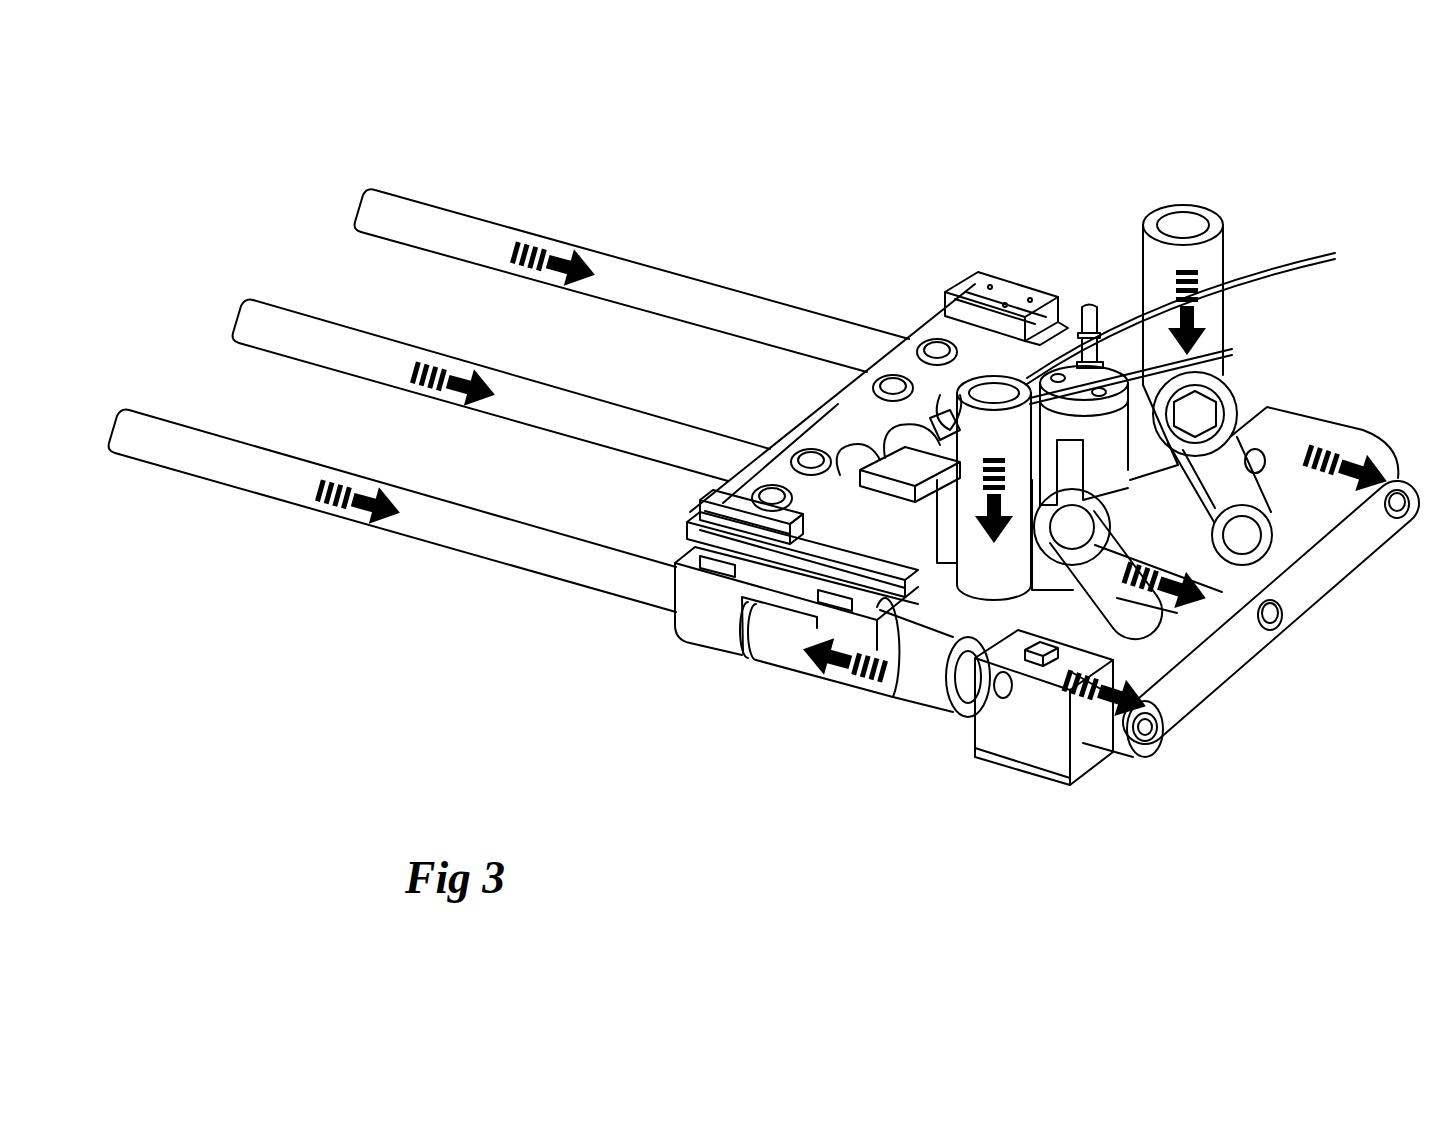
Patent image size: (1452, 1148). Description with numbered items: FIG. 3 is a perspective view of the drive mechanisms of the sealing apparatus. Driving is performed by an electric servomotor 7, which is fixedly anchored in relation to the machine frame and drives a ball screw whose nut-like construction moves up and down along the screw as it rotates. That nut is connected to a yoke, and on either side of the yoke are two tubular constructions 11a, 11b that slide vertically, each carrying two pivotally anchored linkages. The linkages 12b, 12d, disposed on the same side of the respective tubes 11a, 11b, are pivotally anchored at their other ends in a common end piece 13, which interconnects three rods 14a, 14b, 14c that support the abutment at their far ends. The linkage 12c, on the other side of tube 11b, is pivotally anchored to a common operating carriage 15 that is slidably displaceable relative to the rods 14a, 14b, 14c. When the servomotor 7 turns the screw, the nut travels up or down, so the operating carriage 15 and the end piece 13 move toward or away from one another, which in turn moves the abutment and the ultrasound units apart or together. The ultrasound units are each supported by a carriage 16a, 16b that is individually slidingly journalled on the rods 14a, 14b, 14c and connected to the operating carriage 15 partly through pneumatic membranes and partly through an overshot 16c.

The electric servomotor 7 is at (1088, 302).
The tubular construction 11a is at (1210, 257).
The tubular construction 11b is at (968, 438).
The linkage 12b is at (1283, 420).
The linkage 12c is at (938, 560).
The linkage 12d is at (1150, 640).
The end piece 13 is at (1308, 558).
The rod 14a is at (474, 226).
The rod 14b is at (280, 318).
The rod 14c is at (208, 463).
The operating carriage 15 is at (782, 633).
The carriage 16a is at (950, 337).
The carriage 16b is at (717, 620).
The overshot 16c is at (847, 673).